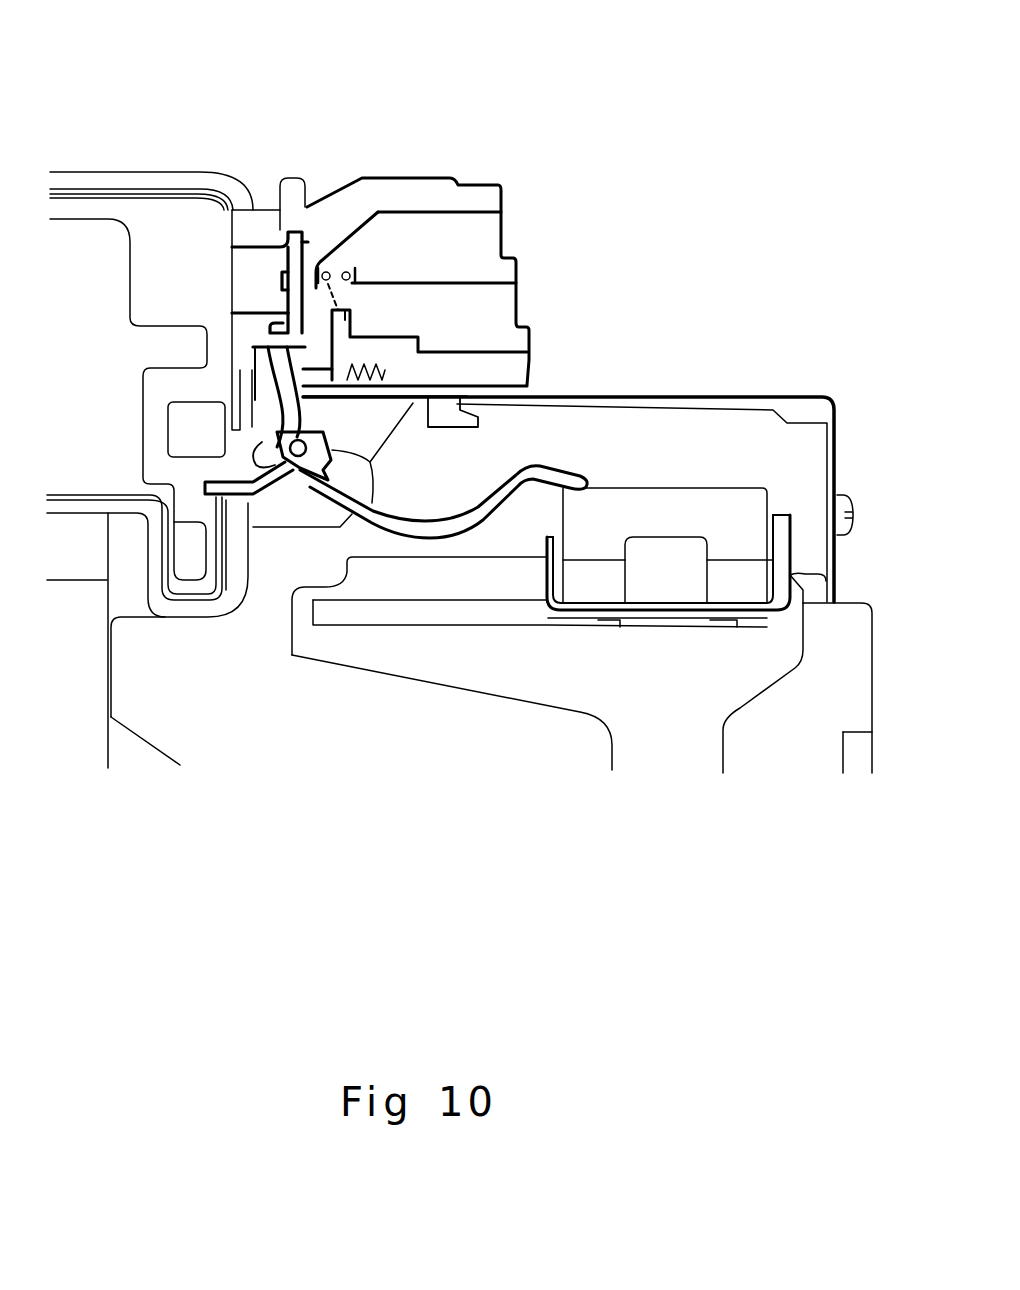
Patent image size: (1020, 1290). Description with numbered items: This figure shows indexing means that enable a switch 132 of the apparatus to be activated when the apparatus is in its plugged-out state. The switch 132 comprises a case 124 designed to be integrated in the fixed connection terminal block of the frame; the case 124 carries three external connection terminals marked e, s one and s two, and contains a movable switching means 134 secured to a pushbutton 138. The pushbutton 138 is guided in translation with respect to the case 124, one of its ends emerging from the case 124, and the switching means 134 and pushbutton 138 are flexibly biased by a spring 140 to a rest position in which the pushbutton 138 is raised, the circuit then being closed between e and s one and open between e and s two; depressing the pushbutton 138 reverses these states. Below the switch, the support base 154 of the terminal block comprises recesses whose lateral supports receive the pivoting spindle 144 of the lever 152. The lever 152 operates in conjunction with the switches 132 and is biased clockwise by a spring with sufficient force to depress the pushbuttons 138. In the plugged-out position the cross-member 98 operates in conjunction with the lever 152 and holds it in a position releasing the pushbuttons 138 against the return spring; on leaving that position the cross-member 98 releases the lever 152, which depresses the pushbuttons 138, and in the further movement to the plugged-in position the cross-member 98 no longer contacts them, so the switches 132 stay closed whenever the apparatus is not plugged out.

The cross-member 98 is at (658, 612).
The case 124 is at (412, 197).
The switch 132 is at (526, 199).
The movable switching means 134 is at (350, 293).
The pushbutton 138 is at (322, 372).
The spring 140 is at (383, 377).
The pivoting spindle 144 is at (273, 462).
The lever 152 is at (410, 527).
The support base 154 is at (253, 247).